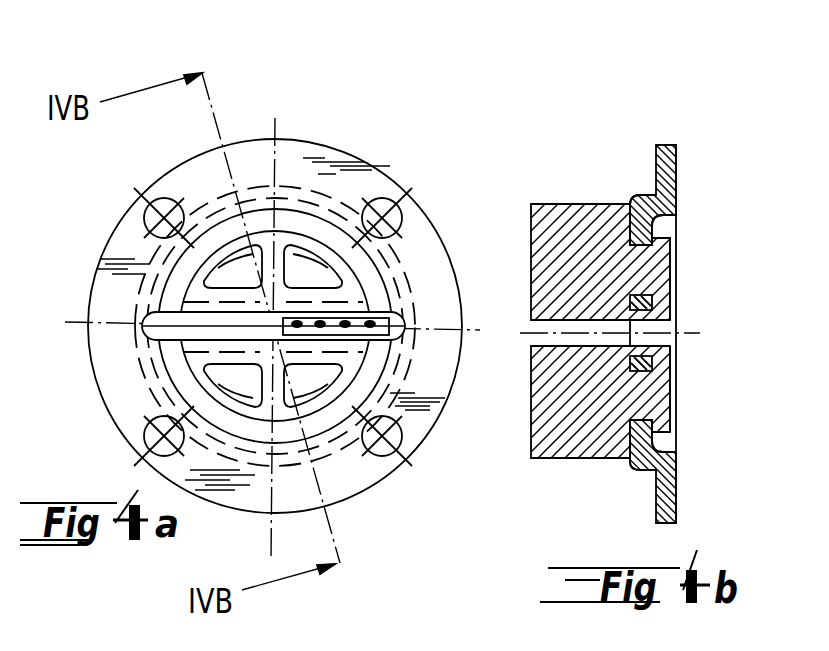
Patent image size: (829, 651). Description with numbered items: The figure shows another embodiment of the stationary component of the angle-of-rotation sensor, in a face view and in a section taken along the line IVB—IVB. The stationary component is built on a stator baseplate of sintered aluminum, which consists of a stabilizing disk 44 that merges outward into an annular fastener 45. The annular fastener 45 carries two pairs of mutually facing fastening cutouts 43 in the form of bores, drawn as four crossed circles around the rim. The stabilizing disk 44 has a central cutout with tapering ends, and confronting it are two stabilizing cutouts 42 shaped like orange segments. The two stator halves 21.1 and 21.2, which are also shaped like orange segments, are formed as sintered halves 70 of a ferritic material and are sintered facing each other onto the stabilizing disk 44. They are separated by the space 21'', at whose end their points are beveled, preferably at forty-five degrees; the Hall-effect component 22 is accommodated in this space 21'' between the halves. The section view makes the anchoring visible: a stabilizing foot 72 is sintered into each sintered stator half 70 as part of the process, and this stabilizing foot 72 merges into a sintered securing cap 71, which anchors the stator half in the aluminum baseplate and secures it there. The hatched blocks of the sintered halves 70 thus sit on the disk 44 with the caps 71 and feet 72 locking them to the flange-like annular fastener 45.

In FIG. 4A, the stator half 21.1 is at (295, 221).
In FIG. 4A, the stator half 21.2 is at (323, 447).
In FIG. 4B, the space 21'' is at (590, 354).
In FIG. 4A, the Hall-effect component 22 is at (392, 340).
In FIG. 4A, the stabilizing cutout 42 is at (323, 380).
In FIG. 4A, the fastening cutout 43 is at (384, 203).
In FIG. 4B, the stabilizing disk 44 is at (625, 458).
In FIG. 4B, the annular fastener 45 is at (672, 145).
In FIG. 4B, the sintered stator half 70 is at (563, 218).
In FIG. 4B, the securing cap 71 is at (667, 248).
In FIG. 4B, the stabilizing foot 72 is at (668, 295).